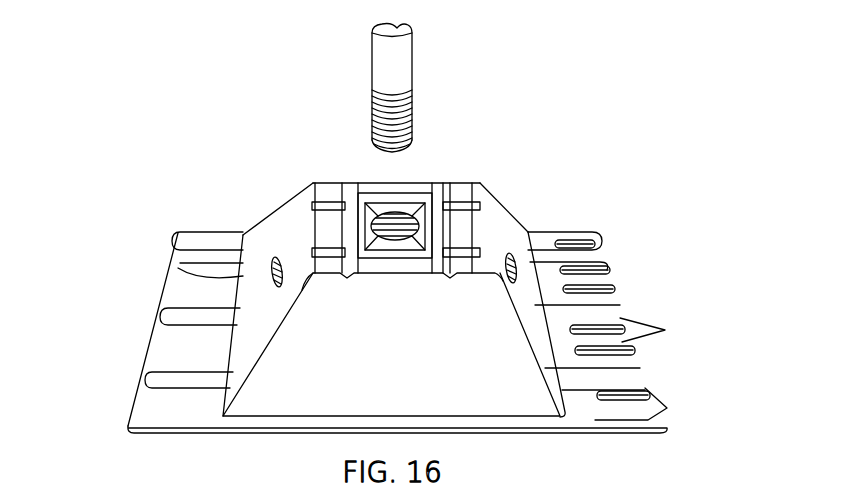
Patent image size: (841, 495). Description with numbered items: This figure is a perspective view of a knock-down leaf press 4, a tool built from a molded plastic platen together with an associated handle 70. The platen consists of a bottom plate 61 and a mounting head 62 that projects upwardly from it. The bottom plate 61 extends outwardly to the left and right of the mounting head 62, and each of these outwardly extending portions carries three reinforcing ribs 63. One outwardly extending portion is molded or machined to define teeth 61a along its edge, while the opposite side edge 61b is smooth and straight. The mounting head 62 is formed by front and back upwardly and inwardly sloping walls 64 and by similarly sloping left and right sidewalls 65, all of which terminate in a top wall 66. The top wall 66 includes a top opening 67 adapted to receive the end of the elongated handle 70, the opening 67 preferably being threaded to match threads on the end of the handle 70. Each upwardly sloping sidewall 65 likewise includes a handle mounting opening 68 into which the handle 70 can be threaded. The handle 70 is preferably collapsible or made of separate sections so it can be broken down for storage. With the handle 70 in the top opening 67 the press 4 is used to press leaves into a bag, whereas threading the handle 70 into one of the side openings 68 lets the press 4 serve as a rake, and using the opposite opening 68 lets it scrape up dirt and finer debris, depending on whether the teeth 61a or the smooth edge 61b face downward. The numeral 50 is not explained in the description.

The leaf press 4 is at (303, 50).
The anchor base assembly 50 is at (320, 160).
The bottom plate 61 is at (165, 420).
The teeth 61a is at (607, 259).
The side edge 61b is at (142, 393).
The mounting head 62 is at (373, 326).
The reinforcing ribs 63 is at (176, 237).
The front and back walls 64 is at (472, 330).
The left and right sidewalls 65 is at (292, 244).
The top wall 66 is at (460, 215).
The top opening 67 is at (398, 217).
The handle mounting opening 68 is at (180, 275).
The handle 70 is at (408, 63).